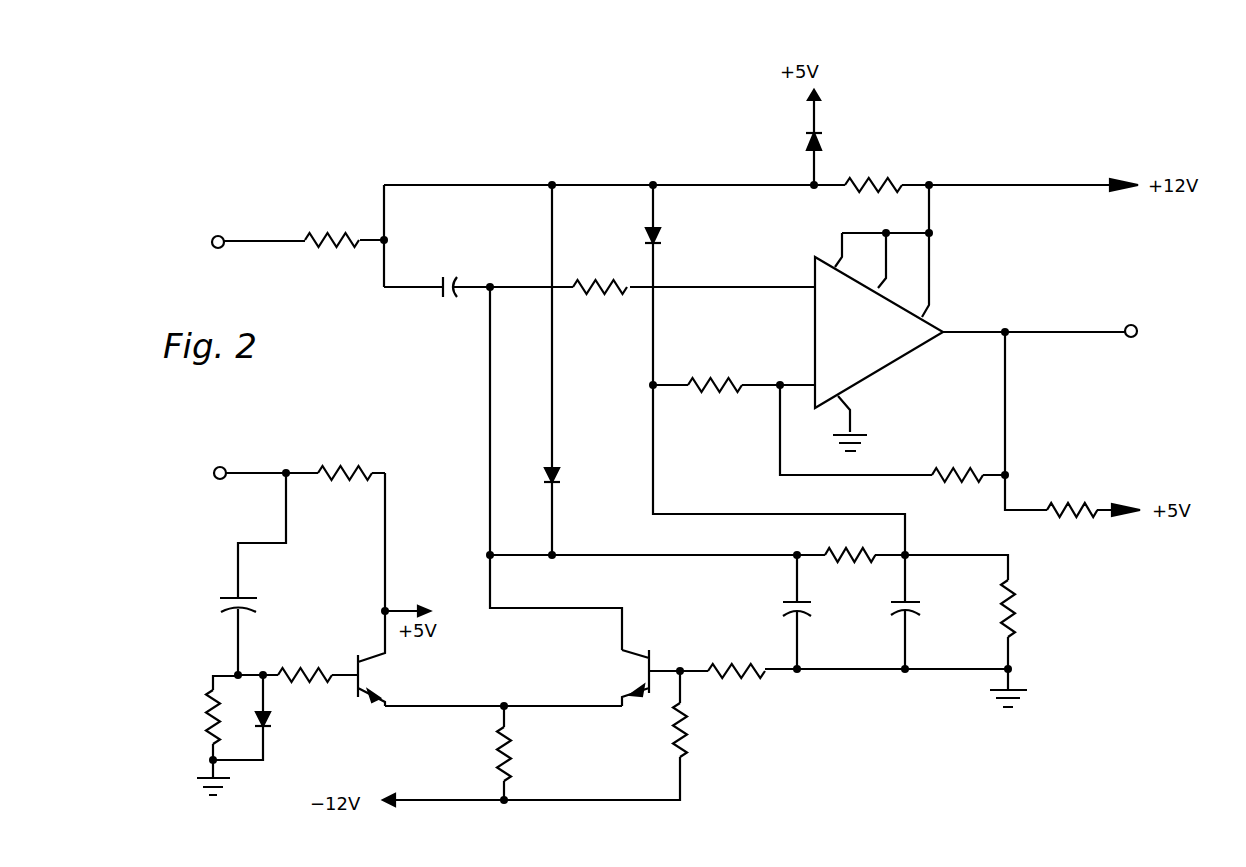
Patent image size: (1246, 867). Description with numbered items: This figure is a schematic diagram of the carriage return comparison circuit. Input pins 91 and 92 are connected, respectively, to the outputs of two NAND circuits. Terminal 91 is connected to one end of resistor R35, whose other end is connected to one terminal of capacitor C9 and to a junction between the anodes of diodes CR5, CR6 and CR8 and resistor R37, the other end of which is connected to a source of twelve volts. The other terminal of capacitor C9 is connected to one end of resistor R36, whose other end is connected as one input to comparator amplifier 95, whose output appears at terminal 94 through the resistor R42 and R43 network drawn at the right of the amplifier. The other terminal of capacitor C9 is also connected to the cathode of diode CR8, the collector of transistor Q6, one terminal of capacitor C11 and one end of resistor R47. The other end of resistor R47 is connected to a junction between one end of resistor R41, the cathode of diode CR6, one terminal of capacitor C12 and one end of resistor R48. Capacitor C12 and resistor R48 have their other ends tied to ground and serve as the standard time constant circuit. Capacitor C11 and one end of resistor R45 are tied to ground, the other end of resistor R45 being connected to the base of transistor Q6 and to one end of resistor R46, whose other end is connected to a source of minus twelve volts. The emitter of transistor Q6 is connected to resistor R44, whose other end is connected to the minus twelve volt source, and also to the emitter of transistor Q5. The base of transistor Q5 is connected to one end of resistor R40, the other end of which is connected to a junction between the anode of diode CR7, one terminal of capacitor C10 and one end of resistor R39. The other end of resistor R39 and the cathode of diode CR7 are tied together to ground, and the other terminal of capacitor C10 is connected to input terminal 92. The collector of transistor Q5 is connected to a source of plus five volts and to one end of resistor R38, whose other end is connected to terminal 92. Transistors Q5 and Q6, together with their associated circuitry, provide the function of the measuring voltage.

The input pin 91 is at (215, 236).
The input pin 92 is at (216, 467).
The output terminal 94 is at (1131, 325).
The comparator amplifier 95 is at (897, 348).
The resistor R35 is at (332, 226).
The resistor R36 is at (600, 273).
The resistor R37 is at (873, 169).
The resistor R38 is at (351, 459).
The resistor R39 is at (188, 717).
The resistor R40 is at (305, 661).
The resistor R41 is at (715, 372).
The resistor R42 is at (957, 460).
The resistor R43 is at (1072, 497).
The resistor R44 is at (527, 754).
The resistor R45 is at (722, 656).
The resistor R46 is at (704, 730).
The resistor R47 is at (850, 542).
The resistor R48 is at (1031, 608).
The capacitor C9 is at (445, 275).
The capacitor C10 is at (257, 595).
The capacitor C11 is at (820, 609).
The capacitor C12 is at (929, 606).
The diode CR5 is at (783, 137).
The diode CR6 is at (676, 233).
The diode CR7 is at (268, 717).
The diode CR8 is at (574, 462).
The transistor Q5 is at (371, 658).
The transistor Q6 is at (633, 678).